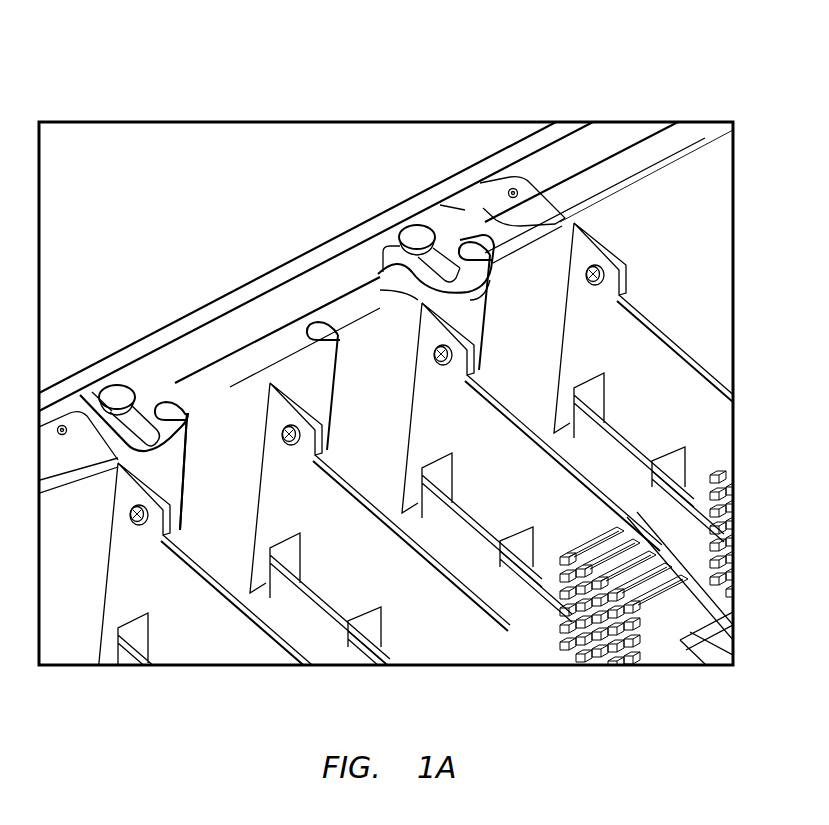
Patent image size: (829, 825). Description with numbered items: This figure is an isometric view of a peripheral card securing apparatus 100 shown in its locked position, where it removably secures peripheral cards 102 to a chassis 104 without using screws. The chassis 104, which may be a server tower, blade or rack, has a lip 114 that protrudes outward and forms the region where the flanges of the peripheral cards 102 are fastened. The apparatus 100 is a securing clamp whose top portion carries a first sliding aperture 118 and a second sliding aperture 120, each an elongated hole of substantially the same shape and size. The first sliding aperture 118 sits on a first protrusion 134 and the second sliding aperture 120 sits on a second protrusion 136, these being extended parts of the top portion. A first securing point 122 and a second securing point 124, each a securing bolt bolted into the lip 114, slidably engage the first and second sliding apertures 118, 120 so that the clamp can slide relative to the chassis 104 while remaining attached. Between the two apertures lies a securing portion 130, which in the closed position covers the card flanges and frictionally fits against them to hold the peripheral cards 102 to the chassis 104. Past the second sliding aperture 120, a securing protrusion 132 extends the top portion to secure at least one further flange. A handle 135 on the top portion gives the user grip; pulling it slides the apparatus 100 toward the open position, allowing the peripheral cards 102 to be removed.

The peripheral card securing apparatus 100 is at (340, 270).
The peripheral card 102 is at (533, 212).
The chassis 104 is at (652, 147).
The lip 114 is at (612, 136).
The first sliding aperture 118 is at (147, 432).
The second sliding aperture 120 is at (448, 276).
The first securing point 122 is at (117, 393).
The second securing point 124 is at (417, 240).
The securing portion 130 is at (290, 307).
The securing protrusion 132 is at (458, 210).
The first protrusion 134 is at (160, 425).
The handle 135 is at (257, 345).
The second protrusion 136 is at (462, 296).